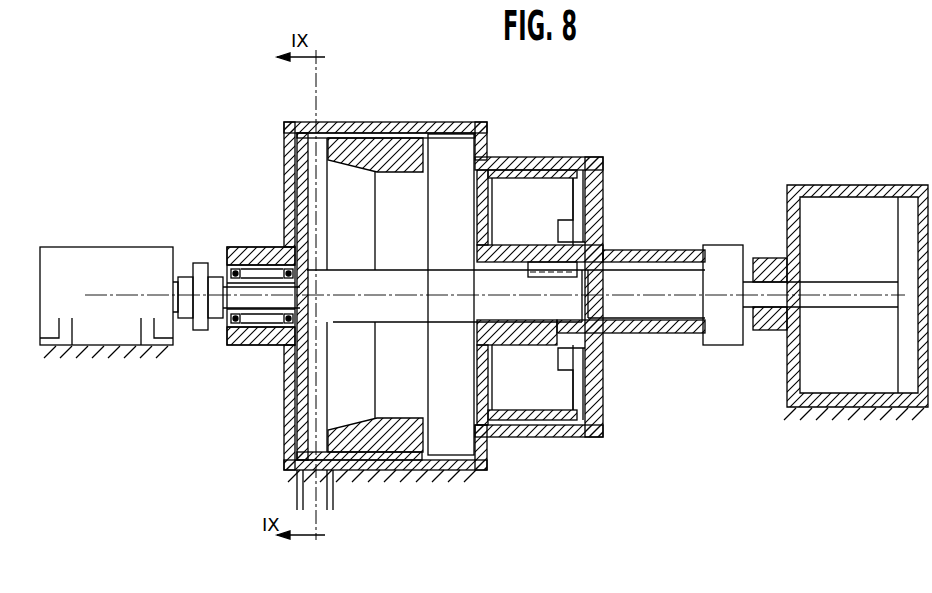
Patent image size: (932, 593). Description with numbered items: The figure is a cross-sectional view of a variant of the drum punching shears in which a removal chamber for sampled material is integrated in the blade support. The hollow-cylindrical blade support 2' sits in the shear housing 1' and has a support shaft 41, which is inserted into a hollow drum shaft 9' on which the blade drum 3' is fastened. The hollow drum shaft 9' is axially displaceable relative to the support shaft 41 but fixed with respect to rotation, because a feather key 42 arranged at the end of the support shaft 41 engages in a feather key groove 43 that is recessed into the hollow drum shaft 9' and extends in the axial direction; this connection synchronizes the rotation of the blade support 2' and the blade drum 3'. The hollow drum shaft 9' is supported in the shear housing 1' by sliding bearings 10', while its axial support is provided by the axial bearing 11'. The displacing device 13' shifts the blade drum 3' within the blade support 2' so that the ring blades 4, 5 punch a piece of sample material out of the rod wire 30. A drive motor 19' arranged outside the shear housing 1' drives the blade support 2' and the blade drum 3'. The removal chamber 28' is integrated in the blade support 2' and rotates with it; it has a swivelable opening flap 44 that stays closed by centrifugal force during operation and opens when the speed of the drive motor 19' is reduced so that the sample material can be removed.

The drive motor 19' is at (106, 277).
The axial bearing 11' is at (476, 270).
The support shaft 41 is at (286, 223).
The shear housing 1' is at (247, 316).
The removal chamber 28' is at (379, 273).
The opening flap 44 is at (341, 476).
The upper bearing 4 is at (423, 137).
The blade support 2' is at (375, 467).
The rod wire 30 is at (440, 192).
The housing part 5 is at (488, 160).
The blade drum 3' is at (532, 207).
The sliding bearings 10' is at (576, 203).
The hollow drum shaft 9' is at (536, 382).
The feather key 42 is at (628, 254).
The feather key groove 43 is at (673, 250).
The displacing device 13' is at (840, 259).